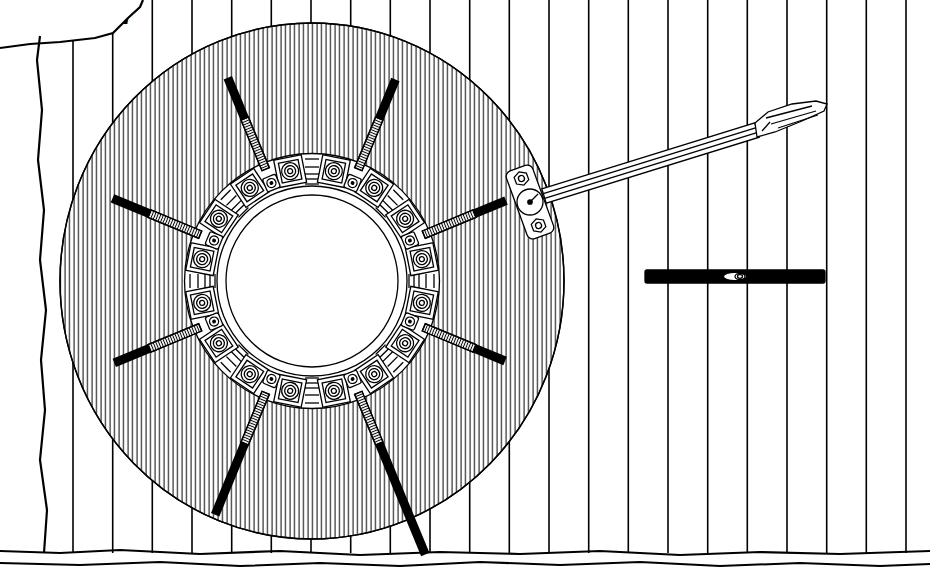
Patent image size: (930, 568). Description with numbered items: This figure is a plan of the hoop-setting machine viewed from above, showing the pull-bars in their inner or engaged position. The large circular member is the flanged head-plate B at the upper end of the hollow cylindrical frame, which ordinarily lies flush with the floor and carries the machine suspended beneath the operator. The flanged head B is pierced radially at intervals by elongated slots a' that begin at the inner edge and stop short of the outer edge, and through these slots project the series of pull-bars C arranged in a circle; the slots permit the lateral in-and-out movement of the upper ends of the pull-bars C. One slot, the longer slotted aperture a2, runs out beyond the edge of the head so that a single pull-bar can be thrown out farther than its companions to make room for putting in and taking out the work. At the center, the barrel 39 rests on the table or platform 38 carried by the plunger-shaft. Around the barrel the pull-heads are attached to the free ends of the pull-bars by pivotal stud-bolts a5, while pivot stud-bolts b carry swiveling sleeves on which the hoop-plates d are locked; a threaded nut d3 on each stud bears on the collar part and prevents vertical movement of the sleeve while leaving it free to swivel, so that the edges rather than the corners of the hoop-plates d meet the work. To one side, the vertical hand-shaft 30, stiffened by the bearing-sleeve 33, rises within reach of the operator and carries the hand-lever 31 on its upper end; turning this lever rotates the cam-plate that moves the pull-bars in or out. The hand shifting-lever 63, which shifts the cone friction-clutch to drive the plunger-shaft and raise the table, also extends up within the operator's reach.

The flanged head-plate B is at (312, 281).
The table or platform 38 is at (400, 191).
The pivot stud-bolts b is at (328, 180).
The barrel 39 is at (312, 281).
The hoop-plates d is at (302, 160).
The threaded nut d3 is at (245, 180).
The pivotal stud-bolt a5 is at (403, 240).
The pull-bars C is at (252, 138).
The elongated apertures or slots a' is at (315, 285).
The longer slotted aperture a2 is at (410, 492).
The vertical hand-shaft 30 is at (541, 190).
The bearing-sleeve 33 is at (546, 208).
The hand-lever 31 is at (737, 138).
The hand shifting-lever 63 is at (736, 284).